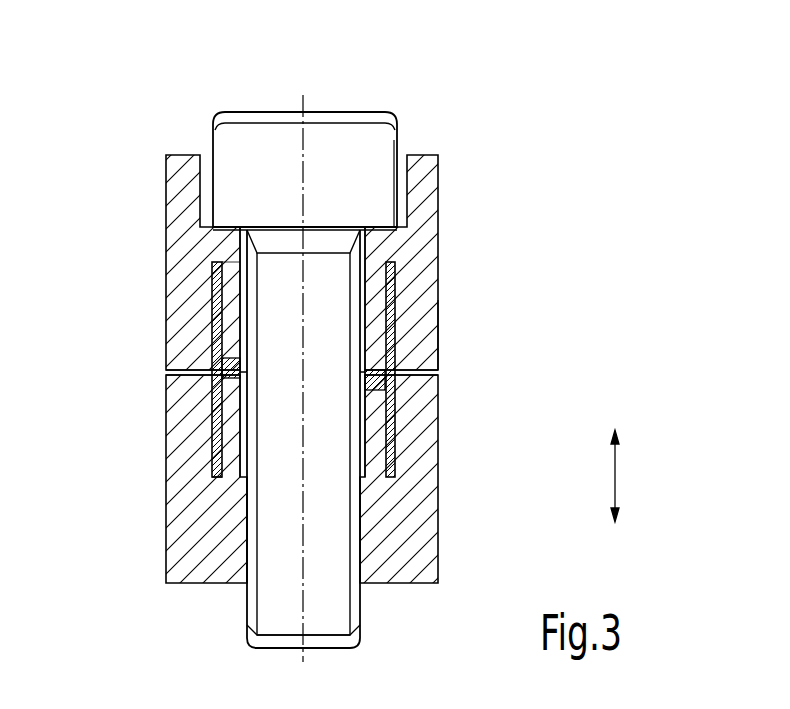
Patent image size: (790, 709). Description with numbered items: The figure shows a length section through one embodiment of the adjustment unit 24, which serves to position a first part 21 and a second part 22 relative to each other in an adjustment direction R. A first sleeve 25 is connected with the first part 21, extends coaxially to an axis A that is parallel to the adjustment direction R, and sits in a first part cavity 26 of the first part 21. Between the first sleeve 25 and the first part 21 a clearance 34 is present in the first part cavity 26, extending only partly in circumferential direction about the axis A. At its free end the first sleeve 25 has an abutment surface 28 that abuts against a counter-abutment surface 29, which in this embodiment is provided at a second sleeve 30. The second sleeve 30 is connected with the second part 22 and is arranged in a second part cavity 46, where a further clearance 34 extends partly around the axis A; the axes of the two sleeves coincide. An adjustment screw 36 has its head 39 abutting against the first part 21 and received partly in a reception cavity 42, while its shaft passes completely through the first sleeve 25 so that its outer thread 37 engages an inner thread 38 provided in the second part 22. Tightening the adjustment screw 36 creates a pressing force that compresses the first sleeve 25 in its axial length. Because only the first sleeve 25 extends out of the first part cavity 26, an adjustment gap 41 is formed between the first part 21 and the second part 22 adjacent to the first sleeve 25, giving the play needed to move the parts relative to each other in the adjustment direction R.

The first part 21 is at (425, 190).
The second part 22 is at (417, 547).
The adjustment unit 24 is at (558, 146).
The first sleeve 25 is at (375, 295).
The first part cavity 26 is at (420, 307).
The abutment surface 28 is at (400, 388).
The counter-abutment surface 29 is at (205, 310).
The second sleeve 30 is at (220, 422).
The clearance 34 is at (400, 338).
The adjustment screw 36 is at (277, 502).
The outer thread 37 is at (242, 610).
The inner thread 38 is at (246, 583).
The head 39 is at (255, 135).
The adjustment gap 41 is at (440, 368).
The reception cavity 42 is at (398, 158).
The second part cavity 46 is at (207, 458).
The axis A is at (305, 135).
The adjustment direction R is at (618, 467).